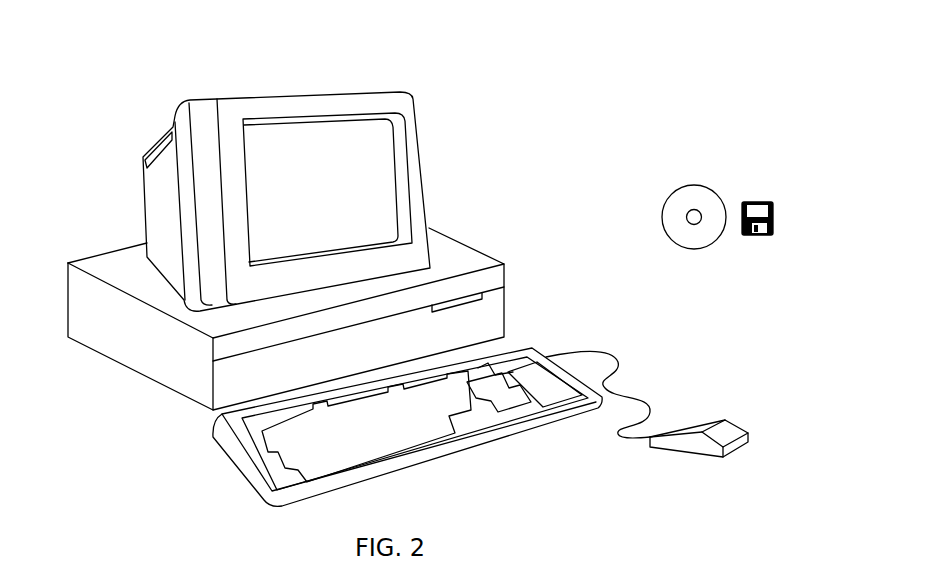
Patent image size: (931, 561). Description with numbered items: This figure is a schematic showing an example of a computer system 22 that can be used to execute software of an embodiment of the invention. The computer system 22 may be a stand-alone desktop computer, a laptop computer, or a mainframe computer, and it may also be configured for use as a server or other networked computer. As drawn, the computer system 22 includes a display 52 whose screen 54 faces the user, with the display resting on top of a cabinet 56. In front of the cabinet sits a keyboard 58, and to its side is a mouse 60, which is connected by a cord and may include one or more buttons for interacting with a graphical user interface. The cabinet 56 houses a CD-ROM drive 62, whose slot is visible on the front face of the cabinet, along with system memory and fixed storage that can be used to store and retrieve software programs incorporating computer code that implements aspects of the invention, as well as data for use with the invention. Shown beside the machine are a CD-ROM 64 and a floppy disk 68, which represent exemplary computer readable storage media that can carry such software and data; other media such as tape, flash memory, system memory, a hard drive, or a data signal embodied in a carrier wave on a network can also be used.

The computer system 22 is at (621, 86).
The display 52 is at (427, 200).
The screen 54 is at (393, 141).
The cabinet 56 is at (180, 392).
The keyboard 58 is at (412, 465).
The mouse 60 is at (738, 427).
The CD-ROM drive 62 is at (482, 293).
The CD-ROM 64 is at (696, 180).
The floppy disk 68 is at (760, 196).